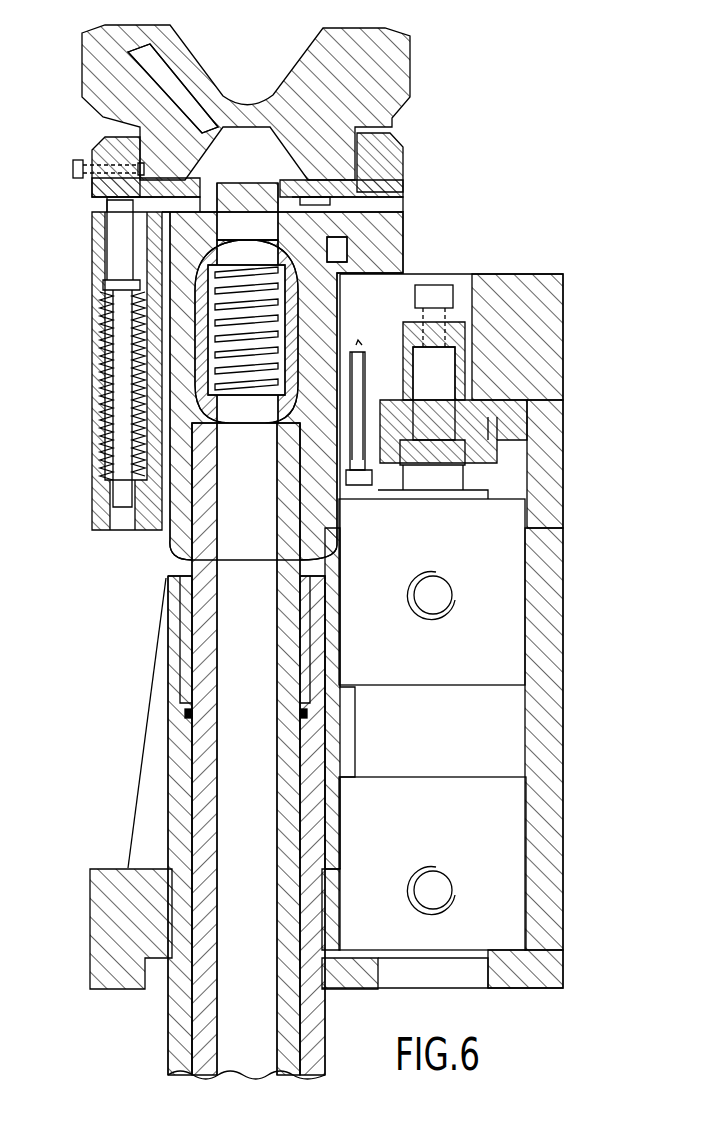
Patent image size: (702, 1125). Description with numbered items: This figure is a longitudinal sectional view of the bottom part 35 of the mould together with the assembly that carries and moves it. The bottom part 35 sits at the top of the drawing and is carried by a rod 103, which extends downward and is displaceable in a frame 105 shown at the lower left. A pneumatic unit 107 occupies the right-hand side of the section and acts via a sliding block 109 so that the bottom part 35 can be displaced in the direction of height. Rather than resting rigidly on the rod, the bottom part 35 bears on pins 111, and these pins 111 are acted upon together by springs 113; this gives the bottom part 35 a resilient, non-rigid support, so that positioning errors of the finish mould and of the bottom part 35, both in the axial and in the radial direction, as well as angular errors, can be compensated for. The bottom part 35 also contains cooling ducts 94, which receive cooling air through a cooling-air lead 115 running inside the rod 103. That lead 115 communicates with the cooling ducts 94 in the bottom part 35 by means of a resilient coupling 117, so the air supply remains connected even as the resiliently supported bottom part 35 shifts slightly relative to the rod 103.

The bottom part 35 is at (386, 52).
The cooling ducts 94 is at (94, 146).
The pins 111 is at (92, 188).
The sliding block 109 is at (386, 292).
The resilient coupling 117 is at (98, 300).
The springs 113 is at (99, 360).
The rod 103 is at (200, 562).
The cooling-air lead 115 is at (226, 610).
The frame 105 is at (108, 868).
The pneumatic unit 107 is at (526, 797).